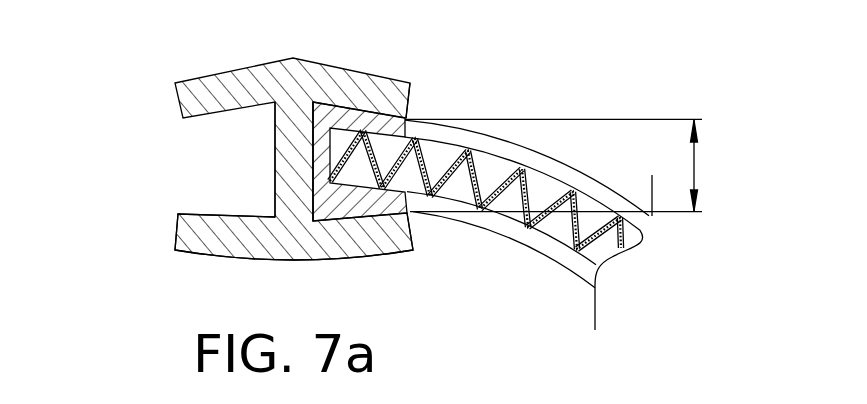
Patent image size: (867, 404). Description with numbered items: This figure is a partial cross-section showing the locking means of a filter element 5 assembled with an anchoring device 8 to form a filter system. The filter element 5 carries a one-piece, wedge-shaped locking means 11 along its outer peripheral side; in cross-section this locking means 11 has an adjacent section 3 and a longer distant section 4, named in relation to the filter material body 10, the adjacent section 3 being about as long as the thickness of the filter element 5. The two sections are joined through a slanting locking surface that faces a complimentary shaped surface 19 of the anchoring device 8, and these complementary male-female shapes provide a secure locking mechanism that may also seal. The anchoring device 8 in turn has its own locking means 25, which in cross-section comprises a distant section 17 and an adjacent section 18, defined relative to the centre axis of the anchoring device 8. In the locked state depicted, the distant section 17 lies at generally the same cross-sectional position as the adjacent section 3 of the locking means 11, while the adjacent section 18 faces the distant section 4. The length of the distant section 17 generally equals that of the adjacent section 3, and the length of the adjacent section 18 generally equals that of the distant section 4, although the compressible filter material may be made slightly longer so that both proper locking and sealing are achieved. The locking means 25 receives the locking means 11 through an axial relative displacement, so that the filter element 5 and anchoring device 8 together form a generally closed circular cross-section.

The adjacent section 3 is at (695, 170).
The distant section 4 is at (307, 183).
The filter element 5 is at (632, 102).
The anchoring device 8 is at (263, 88).
The filter material body 10 is at (528, 192).
The locking means 11 is at (447, 90).
The distant section 17 is at (694, 153).
The adjacent section 18 is at (307, 183).
The complimentary shaped surface 19 is at (215, 222).
The locking means 25 is at (163, 123).